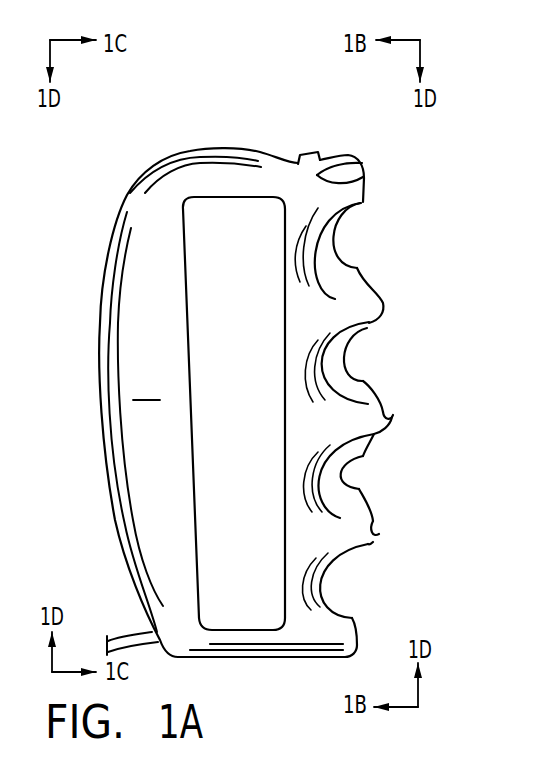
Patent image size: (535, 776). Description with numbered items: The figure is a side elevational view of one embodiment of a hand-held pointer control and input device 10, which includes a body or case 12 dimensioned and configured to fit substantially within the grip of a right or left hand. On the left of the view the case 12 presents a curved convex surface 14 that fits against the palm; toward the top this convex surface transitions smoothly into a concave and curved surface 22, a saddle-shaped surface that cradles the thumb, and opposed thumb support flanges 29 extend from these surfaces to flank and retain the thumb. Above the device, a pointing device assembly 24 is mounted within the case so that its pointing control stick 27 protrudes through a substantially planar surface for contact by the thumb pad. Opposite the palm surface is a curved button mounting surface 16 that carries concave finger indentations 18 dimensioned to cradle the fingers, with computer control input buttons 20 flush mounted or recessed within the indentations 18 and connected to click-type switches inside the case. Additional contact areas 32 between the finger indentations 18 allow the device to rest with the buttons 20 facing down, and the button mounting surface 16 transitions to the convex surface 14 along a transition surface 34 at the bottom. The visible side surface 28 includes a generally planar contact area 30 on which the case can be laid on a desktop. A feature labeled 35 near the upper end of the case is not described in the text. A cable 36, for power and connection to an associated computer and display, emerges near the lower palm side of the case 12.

The hand-held pointer control and input device 10 is at (143, 124).
The body or case 12 is at (106, 253).
The curved convex surface 14 is at (95, 376).
The curved button mounting surface 16 is at (409, 445).
The finger indentations 18 is at (359, 244).
The computer control input buttons 20 is at (355, 267).
The concave and curved surface portion 22 is at (227, 146).
The pointing device assembly 24 is at (326, 137).
The pointing control stick 27 is at (300, 152).
The side surfaces 28 is at (146, 387).
The thumb support flanges 29 is at (182, 160).
The generally planar contact area 30 is at (249, 400).
The additional contact areas 32 is at (394, 418).
The transition surface 34 is at (256, 663).
The recess 35 is at (347, 178).
The cable 36 is at (133, 635).